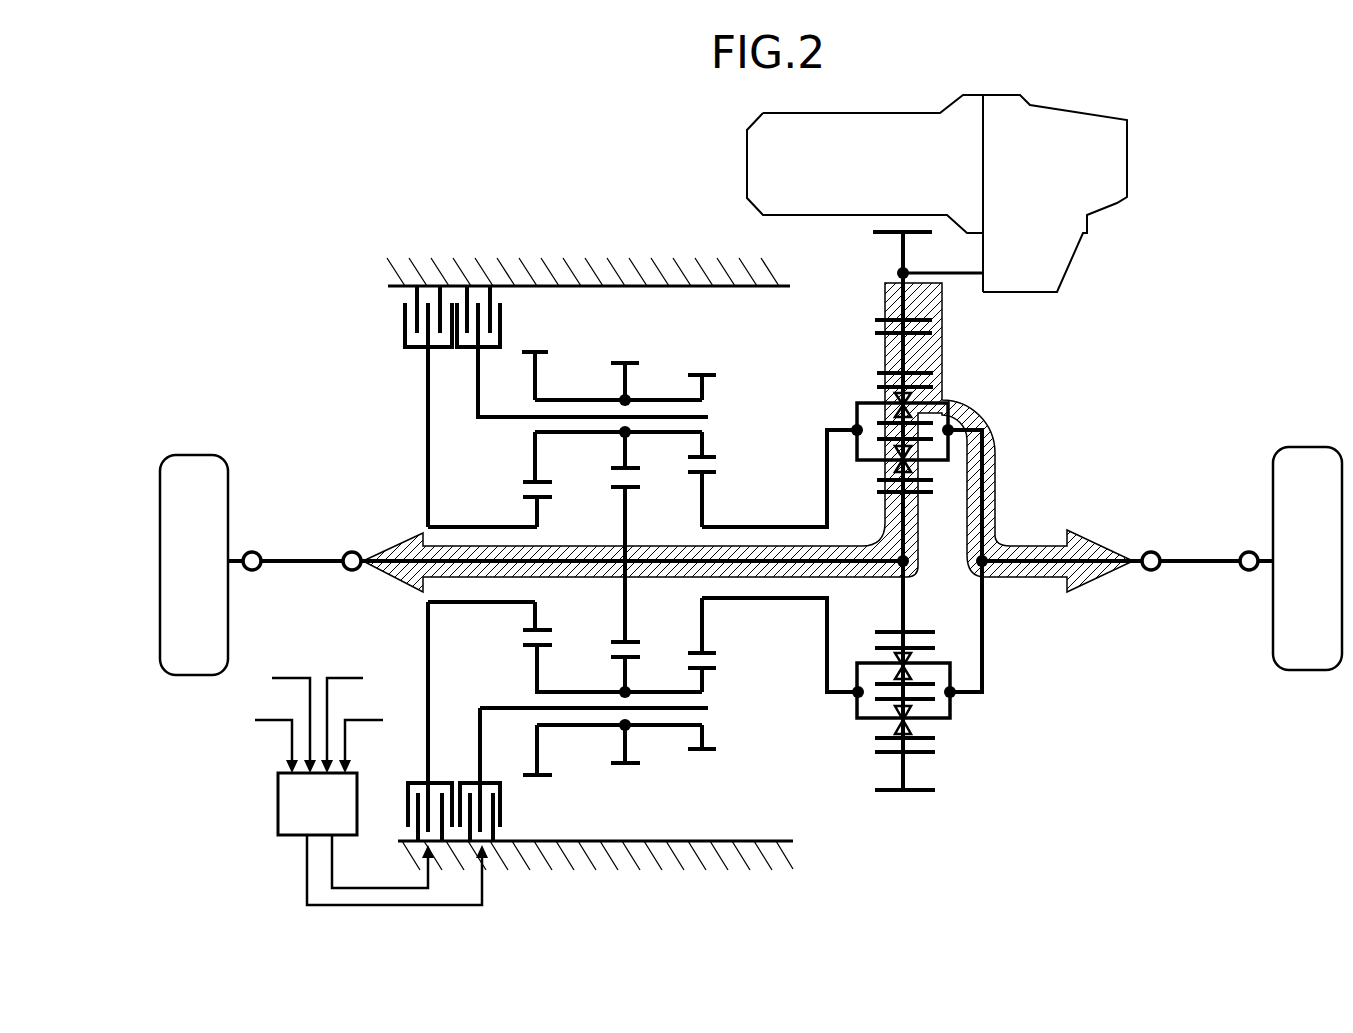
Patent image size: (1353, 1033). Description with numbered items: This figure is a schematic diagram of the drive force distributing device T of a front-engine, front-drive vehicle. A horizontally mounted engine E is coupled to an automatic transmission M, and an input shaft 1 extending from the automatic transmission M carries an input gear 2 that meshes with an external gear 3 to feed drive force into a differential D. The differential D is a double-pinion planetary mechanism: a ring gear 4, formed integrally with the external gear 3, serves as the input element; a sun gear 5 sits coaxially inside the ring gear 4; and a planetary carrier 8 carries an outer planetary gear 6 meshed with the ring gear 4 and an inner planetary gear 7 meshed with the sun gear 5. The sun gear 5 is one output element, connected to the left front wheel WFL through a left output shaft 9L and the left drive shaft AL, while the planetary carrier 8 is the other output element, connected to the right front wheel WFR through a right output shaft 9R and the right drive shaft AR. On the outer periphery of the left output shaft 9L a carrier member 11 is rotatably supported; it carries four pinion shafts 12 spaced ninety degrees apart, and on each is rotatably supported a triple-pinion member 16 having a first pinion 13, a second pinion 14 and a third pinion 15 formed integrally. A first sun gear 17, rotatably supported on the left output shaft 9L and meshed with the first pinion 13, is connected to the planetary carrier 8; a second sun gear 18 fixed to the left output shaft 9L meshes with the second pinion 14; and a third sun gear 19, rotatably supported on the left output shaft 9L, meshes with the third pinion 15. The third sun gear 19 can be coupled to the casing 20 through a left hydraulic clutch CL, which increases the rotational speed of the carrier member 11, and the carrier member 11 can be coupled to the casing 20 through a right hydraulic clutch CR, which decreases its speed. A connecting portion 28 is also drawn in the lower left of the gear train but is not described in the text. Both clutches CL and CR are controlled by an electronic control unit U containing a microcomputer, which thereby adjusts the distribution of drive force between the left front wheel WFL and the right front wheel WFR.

The input shaft 1 is at (923, 273).
The input gear 2 is at (875, 232).
The external gear 3 is at (877, 338).
The ring gear 4 is at (877, 373).
The sun gear 5 is at (923, 497).
The outer planetary gear 6 is at (877, 387).
The inner planetary gear 7 is at (877, 480).
The planetary carrier 8 is at (827, 447).
The left output shaft 9L is at (410, 550).
The right output shaft 9R is at (1083, 537).
The carrier member 11 is at (470, 377).
The pinion shaft 12 is at (537, 412).
The first pinion 13 is at (692, 375).
The second pinion 14 is at (618, 362).
The third pinion 15 is at (545, 350).
The triple-pinion member 16 is at (580, 393).
The first sun gear 17 is at (708, 470).
The second sun gear 18 is at (628, 488).
The third sun gear 19 is at (545, 502).
The casing 20 is at (612, 277).
The shaft 28 is at (458, 525).
The differential D is at (975, 405).
The engine E is at (836, 171).
The automatic transmission M is at (1033, 173).
The drive force distributing device T is at (541, 235).
The left hydraulic clutch CL is at (401, 327).
The right hydraulic clutch CR is at (478, 283).
The left drive shaft AL is at (298, 561).
The right drive shaft AR is at (1195, 561).
The left front wheel WFL is at (196, 455).
The right front wheel WFR is at (1303, 447).
The electronic control unit U is at (305, 822).